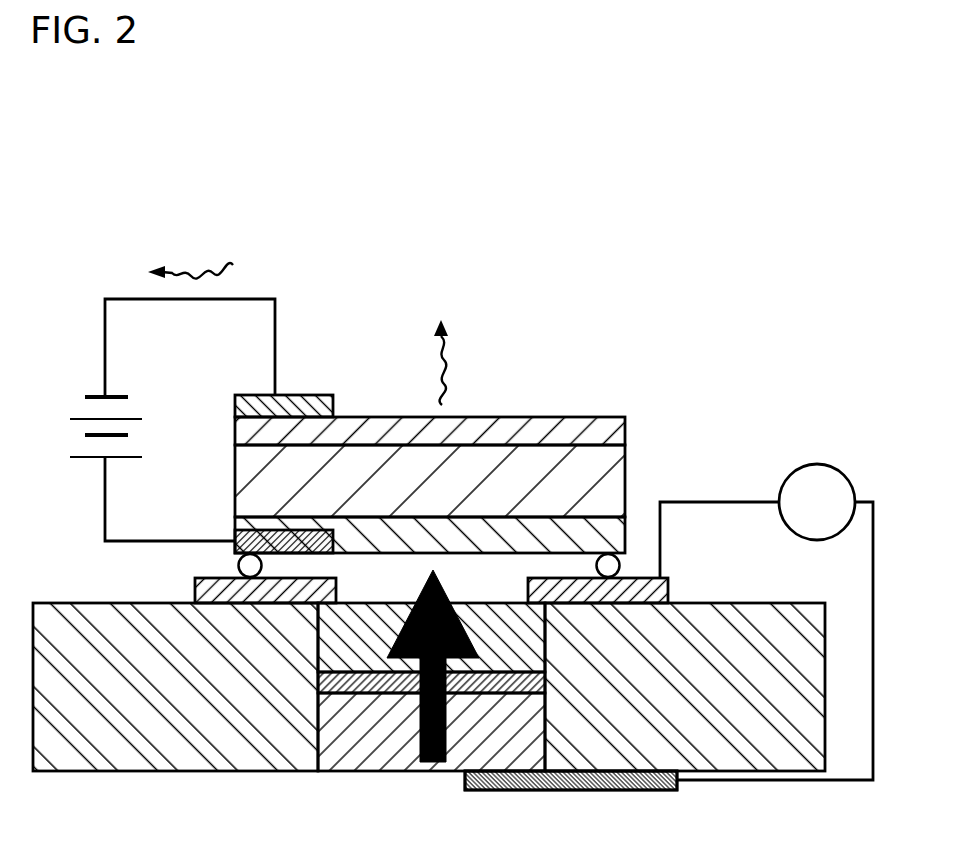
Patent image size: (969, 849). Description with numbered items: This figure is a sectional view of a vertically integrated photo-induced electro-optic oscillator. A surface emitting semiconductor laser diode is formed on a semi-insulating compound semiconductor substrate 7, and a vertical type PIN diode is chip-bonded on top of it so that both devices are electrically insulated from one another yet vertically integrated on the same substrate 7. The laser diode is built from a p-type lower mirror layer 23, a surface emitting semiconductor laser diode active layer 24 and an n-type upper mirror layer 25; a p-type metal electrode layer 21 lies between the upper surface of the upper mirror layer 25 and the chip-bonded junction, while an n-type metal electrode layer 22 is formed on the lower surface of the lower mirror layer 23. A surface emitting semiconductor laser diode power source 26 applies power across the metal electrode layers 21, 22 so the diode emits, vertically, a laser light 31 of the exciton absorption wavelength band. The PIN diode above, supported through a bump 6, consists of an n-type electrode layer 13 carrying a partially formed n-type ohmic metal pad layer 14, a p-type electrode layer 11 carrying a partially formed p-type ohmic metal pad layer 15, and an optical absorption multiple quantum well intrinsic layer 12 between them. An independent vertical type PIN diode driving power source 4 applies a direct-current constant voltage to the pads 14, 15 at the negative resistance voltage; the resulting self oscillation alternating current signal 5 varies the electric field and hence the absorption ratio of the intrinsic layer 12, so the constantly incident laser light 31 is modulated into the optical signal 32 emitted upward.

The vertical type PIN diode driving power source 4 is at (73, 441).
The self oscillation alternating current signal 5 is at (205, 268).
The bump 6 is at (238, 563).
The semi-insulating compound semiconductor substrate 7 is at (64, 604).
The p-type electrode layer 11 is at (522, 417).
The optical absorption multiple quantum well intrinsic layer 12 is at (594, 445).
The n-type electrode layer 13 is at (617, 537).
The n-type ohmic metal pad layer 14 is at (234, 534).
The p-type ohmic metal pad layer 15 is at (290, 395).
The p-type metal electrode layer 21 is at (672, 592).
The n-type metal electrode layer 22 is at (657, 792).
The p-type lower mirror layer 23 is at (322, 654).
The surface emitting semiconductor laser diode active layer 24 is at (354, 692).
The n-type upper mirror layer 25 is at (488, 761).
The surface emitting semiconductor laser diode power source 26 is at (775, 622).
The laser light 31 is at (428, 762).
The optical signal 32 is at (446, 350).